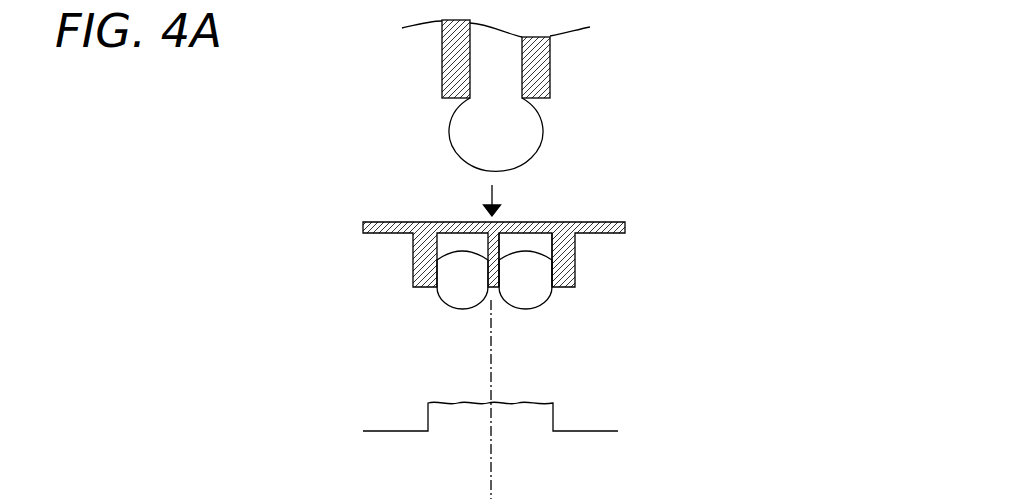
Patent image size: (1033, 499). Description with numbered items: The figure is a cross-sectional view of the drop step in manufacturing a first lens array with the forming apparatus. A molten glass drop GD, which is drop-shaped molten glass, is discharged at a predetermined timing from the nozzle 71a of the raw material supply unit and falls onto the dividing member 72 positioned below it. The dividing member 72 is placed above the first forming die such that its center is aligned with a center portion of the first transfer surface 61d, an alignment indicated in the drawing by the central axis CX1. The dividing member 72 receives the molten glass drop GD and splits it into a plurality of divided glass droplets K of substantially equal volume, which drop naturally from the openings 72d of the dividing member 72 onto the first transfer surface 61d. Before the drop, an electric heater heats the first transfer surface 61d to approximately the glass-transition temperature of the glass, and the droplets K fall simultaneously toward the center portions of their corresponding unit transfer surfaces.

The nozzle 71a is at (550, 62).
The molten glass drop GD is at (468, 142).
The dividing member 72 is at (363, 232).
The openings 72d is at (543, 245).
The divided glass droplets K is at (522, 303).
The first transfer surface 61d is at (543, 398).
The central axis CX1 is at (497, 470).